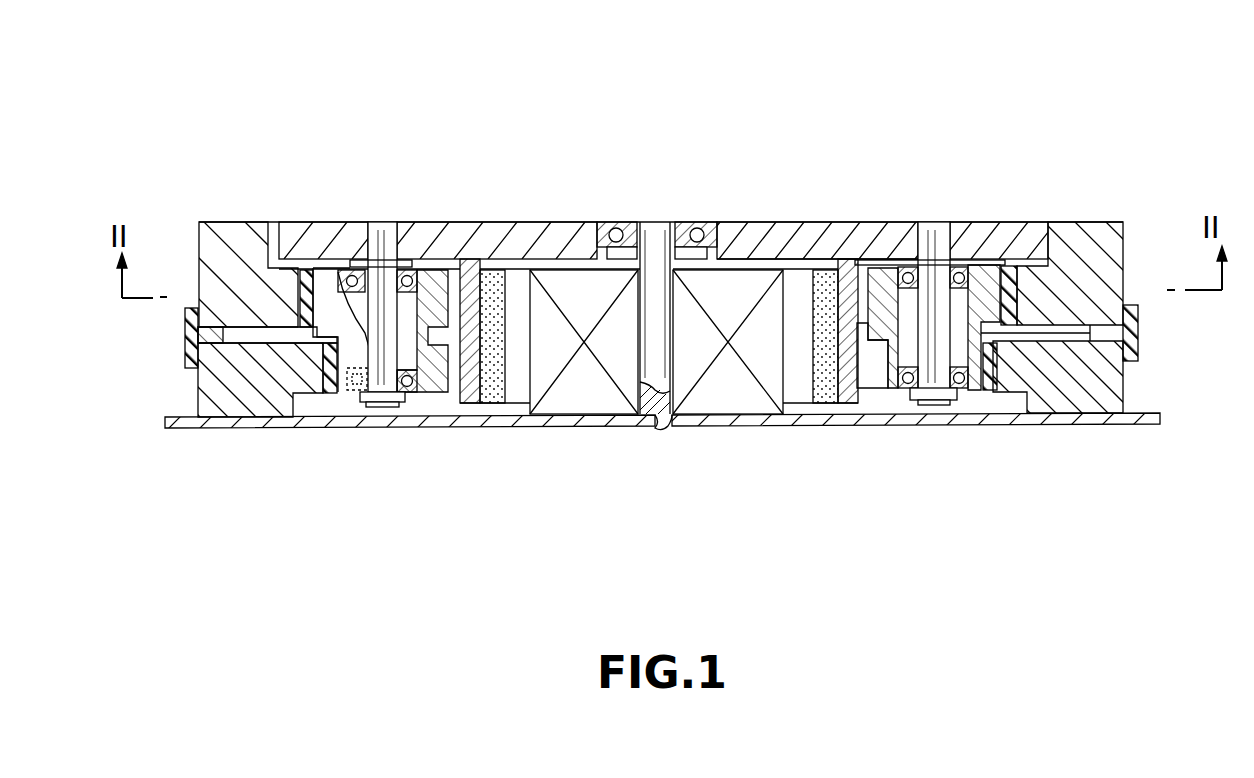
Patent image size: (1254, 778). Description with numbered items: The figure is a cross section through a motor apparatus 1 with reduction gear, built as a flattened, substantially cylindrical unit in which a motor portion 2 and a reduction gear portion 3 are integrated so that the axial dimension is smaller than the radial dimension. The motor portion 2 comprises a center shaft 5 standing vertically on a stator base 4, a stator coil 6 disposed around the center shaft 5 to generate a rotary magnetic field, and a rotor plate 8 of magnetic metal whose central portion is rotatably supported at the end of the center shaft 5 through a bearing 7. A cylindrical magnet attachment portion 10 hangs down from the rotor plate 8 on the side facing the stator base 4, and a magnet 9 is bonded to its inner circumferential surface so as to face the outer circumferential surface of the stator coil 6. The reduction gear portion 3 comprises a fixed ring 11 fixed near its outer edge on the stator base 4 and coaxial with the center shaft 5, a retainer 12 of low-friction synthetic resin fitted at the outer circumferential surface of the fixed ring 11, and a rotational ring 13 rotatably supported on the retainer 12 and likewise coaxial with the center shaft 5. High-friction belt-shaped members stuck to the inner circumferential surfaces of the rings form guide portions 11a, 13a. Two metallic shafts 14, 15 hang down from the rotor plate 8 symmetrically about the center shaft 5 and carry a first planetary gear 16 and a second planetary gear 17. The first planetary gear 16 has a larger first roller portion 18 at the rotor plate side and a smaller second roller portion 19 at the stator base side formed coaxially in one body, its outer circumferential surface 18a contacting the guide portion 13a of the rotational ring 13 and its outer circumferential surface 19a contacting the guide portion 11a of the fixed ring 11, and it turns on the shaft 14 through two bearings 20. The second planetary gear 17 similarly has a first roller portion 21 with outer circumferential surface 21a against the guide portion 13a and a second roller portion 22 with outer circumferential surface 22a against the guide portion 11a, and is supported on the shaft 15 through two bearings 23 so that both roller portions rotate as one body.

The motor apparatus with reduction gear 1 is at (948, 108).
The motor portion 2 is at (543, 222).
The reduction gear portion 3 is at (198, 245).
The stator base 4 is at (575, 427).
The center shaft 5 is at (662, 222).
The stator coil 6 is at (740, 405).
The bearing 7 is at (618, 222).
The rotor plate 8 is at (800, 222).
The magnet 9 is at (823, 403).
The magnet attachment portion 10 is at (848, 403).
The fixed ring 11 is at (1105, 395).
The guide portion 11a is at (990, 390).
The retainer 12 is at (1136, 325).
The rotational ring 13 is at (1077, 232).
The guide portion 13a is at (1013, 262).
The shaft 14 is at (942, 404).
The shaft 15 is at (378, 406).
The first planetary gear 16 is at (960, 268).
The second planetary gear 17 is at (425, 262).
The first roller portion 18 is at (875, 268).
The outer circumferential surface 18a is at (1017, 303).
The second roller portion 19 is at (872, 392).
The outer circumferential surface 19a is at (1012, 392).
The bearing 20 is at (933, 262).
The first roller portion 21 is at (469, 262).
The outer circumferential surface 21a is at (286, 262).
The second roller portion 22 is at (428, 383).
The outer circumferential surface 22a is at (328, 380).
The bearing 23 is at (350, 270).